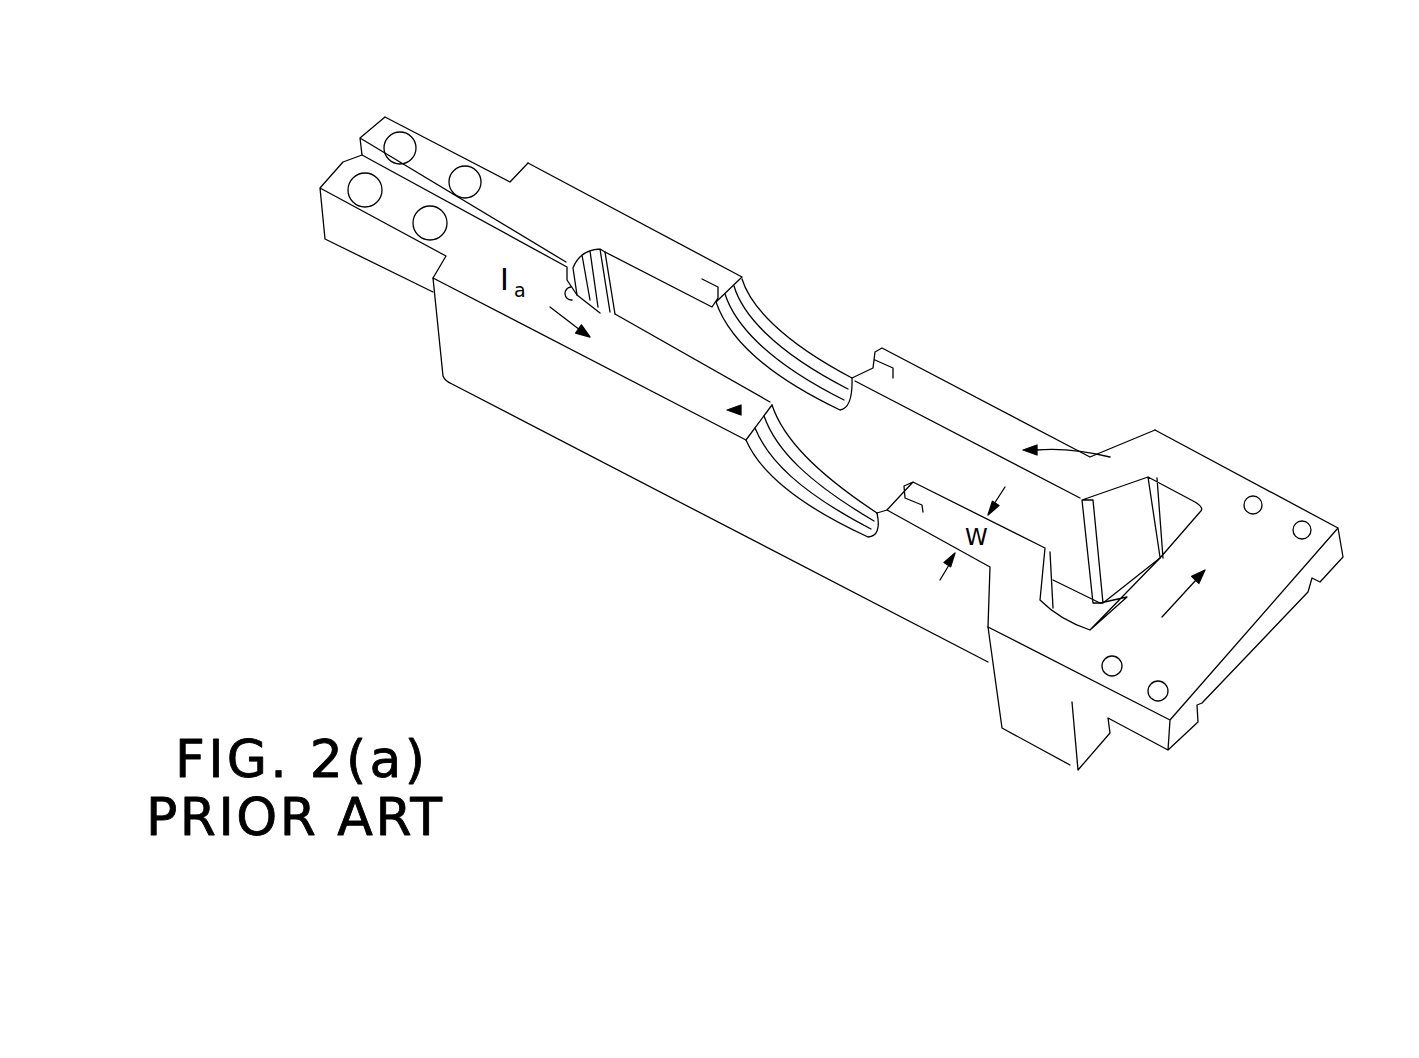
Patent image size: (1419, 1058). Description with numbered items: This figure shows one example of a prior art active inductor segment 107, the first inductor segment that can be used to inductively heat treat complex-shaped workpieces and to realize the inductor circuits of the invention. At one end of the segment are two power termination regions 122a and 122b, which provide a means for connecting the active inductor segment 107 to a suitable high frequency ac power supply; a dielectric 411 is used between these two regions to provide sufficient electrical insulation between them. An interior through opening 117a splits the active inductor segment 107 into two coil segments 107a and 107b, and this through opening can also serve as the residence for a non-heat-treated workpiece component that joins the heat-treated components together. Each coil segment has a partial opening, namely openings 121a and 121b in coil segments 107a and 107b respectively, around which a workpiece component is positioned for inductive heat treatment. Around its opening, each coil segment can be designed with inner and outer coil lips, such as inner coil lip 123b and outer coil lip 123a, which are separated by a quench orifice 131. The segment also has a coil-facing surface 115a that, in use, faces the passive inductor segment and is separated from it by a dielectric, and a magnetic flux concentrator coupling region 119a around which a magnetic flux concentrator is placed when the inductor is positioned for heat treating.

The dielectric 411 is at (340, 140).
The active inductor segment 107 is at (930, 142).
The coil segment 107a is at (615, 425).
The coil segment 107b is at (752, 244).
The coil-facing surface 115a is at (681, 262).
The interior through opening 117a is at (975, 477).
The magnetic flux concentrator coupling region 119a is at (1190, 612).
The partial opening 121a is at (853, 464).
The partial opening 121b is at (830, 309).
The power termination region 122a is at (438, 167).
The power termination region 122b is at (392, 205).
The outer coil lip 123a is at (782, 502).
The inner coil lip 123b is at (838, 508).
The quench orifice 131 is at (660, 358).